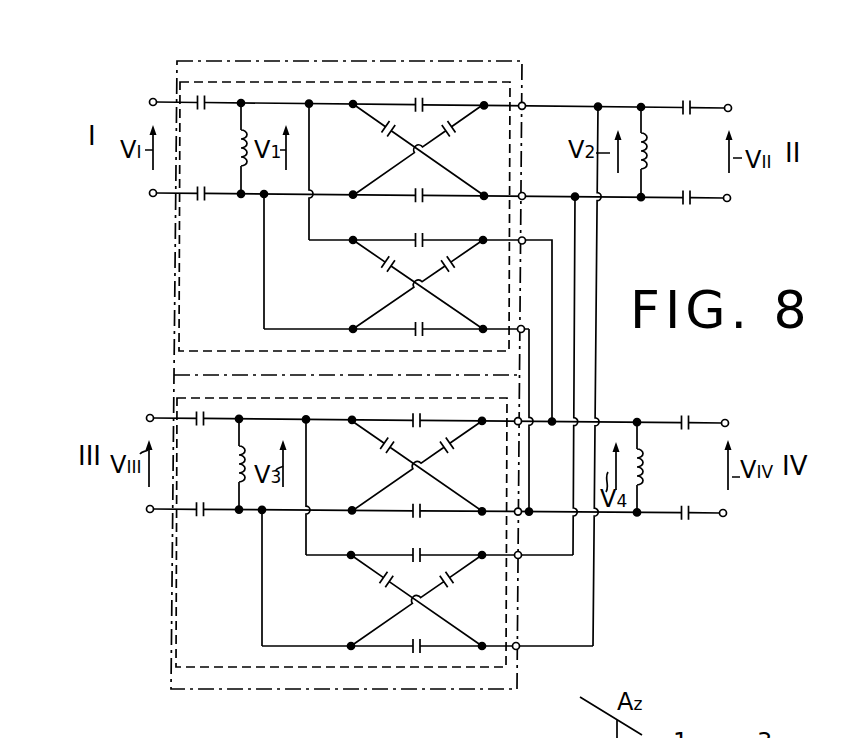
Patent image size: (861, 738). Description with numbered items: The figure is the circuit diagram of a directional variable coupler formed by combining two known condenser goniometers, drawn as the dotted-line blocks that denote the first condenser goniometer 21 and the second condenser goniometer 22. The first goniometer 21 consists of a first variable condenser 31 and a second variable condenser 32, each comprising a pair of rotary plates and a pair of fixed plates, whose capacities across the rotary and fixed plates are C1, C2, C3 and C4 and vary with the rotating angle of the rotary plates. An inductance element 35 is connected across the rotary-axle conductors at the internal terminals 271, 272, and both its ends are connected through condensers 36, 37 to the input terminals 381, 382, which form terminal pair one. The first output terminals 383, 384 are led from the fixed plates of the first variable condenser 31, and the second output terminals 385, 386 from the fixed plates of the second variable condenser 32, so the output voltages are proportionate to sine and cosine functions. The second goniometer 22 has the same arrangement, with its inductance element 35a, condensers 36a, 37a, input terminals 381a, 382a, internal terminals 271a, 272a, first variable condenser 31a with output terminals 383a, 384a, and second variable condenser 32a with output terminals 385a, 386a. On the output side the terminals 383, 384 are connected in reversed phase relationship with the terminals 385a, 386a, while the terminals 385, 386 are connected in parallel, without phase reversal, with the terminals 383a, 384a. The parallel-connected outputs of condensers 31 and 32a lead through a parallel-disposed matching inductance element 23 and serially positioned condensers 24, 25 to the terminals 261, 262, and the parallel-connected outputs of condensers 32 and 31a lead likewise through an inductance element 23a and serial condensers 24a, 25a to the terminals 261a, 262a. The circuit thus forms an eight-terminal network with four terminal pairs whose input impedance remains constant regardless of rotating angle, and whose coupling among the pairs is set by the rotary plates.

The first condenser goniometer 21 is at (380, 61).
The second condenser goniometer 22 is at (380, 689).
The inductance element 23 is at (648, 162).
The inductance element 23a is at (642, 462).
The condenser 24 is at (686, 110).
The condenser 24a is at (686, 416).
The condenser 25 is at (688, 201).
The condenser 25a is at (688, 515).
The first variable condenser 31 is at (440, 108).
The first variable condenser 31a is at (350, 451).
The second variable condenser 32 is at (320, 312).
The second variable condenser 32a is at (466, 649).
The inductance element 35 is at (241, 150).
The inductance element 35a is at (239, 466).
The condenser 36 is at (203, 93).
The condenser 36a is at (204, 424).
The condenser 37 is at (203, 201).
The condenser 37a is at (200, 515).
The terminal 261 is at (731, 109).
The terminal 261a is at (729, 423).
The terminal 262 is at (730, 198).
The terminal 262a is at (726, 513).
The terminal 271 is at (309, 98).
The terminal 271a is at (306, 417).
The terminal 272 is at (265, 199).
The terminal 272a is at (263, 515).
The input terminal 381 is at (150, 102).
The input terminal 381a is at (120, 409).
The input terminal 382 is at (152, 196).
The input terminal 382a is at (120, 514).
The first output terminal 383 is at (524, 104).
The first output terminal 383a is at (521, 424).
The first output terminal 384 is at (524, 195).
The first output terminal 384a is at (518, 515).
The second output terminal 385 is at (524, 238).
The second output terminal 385a is at (519, 558).
The second output terminal 386 is at (518, 327).
The second output terminal 386a is at (518, 649).
The capacity C1 is at (407, 298).
The capacity C2 is at (416, 313).
The capacity C3 is at (424, 434).
The capacity C4 is at (416, 440).